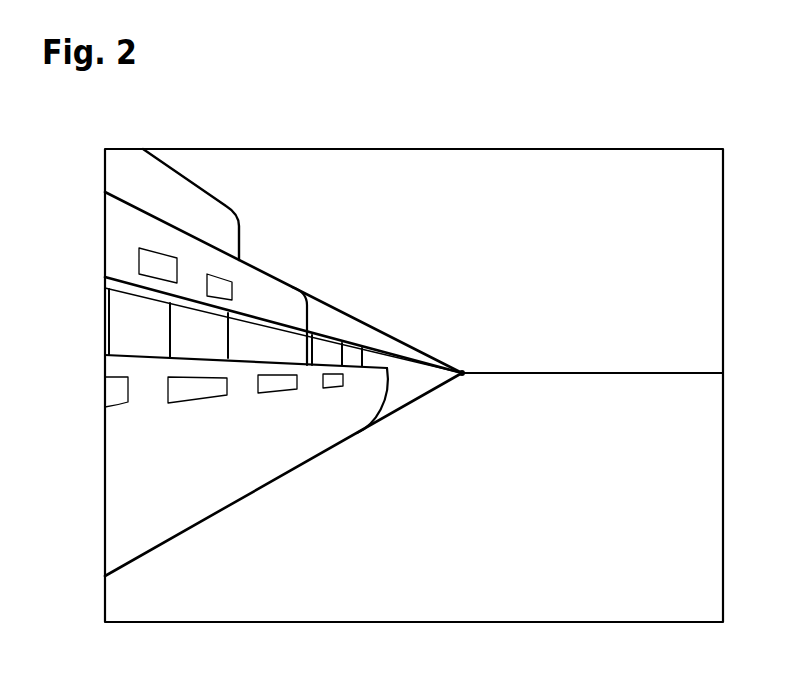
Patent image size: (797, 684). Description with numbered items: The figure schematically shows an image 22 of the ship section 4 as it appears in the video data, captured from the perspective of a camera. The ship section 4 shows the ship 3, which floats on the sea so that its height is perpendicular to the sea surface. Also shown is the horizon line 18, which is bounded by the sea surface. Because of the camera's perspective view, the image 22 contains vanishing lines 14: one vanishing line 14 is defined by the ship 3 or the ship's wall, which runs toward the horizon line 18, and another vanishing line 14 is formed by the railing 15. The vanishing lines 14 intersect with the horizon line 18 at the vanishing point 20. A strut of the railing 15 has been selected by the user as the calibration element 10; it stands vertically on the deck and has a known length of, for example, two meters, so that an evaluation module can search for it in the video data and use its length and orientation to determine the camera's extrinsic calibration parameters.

The ship 3 is at (240, 227).
The ship section 4 is at (486, 257).
The calibration element 10 is at (170, 330).
The vanishing lines 14 is at (392, 350).
The railing 15 is at (133, 289).
The horizon line 18 is at (590, 372).
The vanishing point 20 is at (463, 377).
The image 22 is at (572, 149).